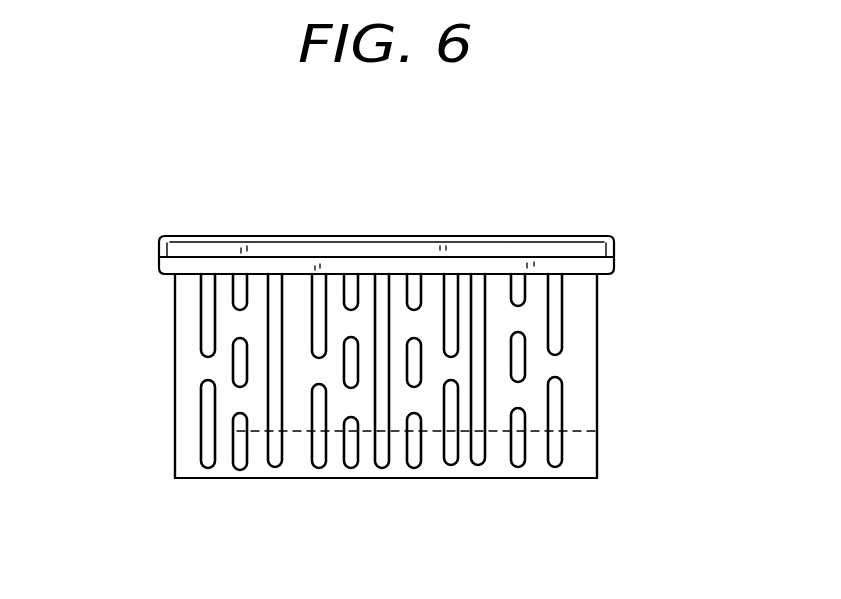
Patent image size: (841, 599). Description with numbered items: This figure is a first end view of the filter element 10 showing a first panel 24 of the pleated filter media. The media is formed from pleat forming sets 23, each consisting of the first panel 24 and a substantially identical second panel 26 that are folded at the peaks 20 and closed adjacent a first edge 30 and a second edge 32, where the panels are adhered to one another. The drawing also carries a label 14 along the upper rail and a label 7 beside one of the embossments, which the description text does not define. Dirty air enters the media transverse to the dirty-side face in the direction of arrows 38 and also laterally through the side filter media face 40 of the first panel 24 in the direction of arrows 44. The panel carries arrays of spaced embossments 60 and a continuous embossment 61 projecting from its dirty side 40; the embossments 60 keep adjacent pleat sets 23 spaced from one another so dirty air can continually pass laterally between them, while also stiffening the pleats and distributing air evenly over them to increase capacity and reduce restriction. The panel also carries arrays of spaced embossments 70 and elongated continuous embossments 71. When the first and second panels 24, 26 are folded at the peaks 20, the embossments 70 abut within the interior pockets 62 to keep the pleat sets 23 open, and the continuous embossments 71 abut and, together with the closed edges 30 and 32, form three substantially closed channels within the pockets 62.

The filter element 10 is at (531, 180).
The top rail 14 is at (252, 236).
The peaks 20 is at (420, 479).
The pleat forming sets 23 is at (174, 388).
The first panel 24 is at (583, 362).
The second panel 26 is at (175, 317).
The first edge 30 is at (181, 442).
The second edge 32 is at (597, 425).
The arrows indicating direction of dirty air flow 38 is at (210, 479).
The side filter media face 40 is at (583, 400).
The arrows indicating lateral air flow direction 44 is at (175, 358).
The arrays of spaced embossments 60 is at (317, 479).
The continuous embossment 61 is at (380, 480).
The interior pockets 62 is at (172, 467).
The arrays of spaced embossments 70 is at (209, 294).
The elongated continuous embossments 71 is at (485, 327).
The slot divider 7 is at (283, 368).